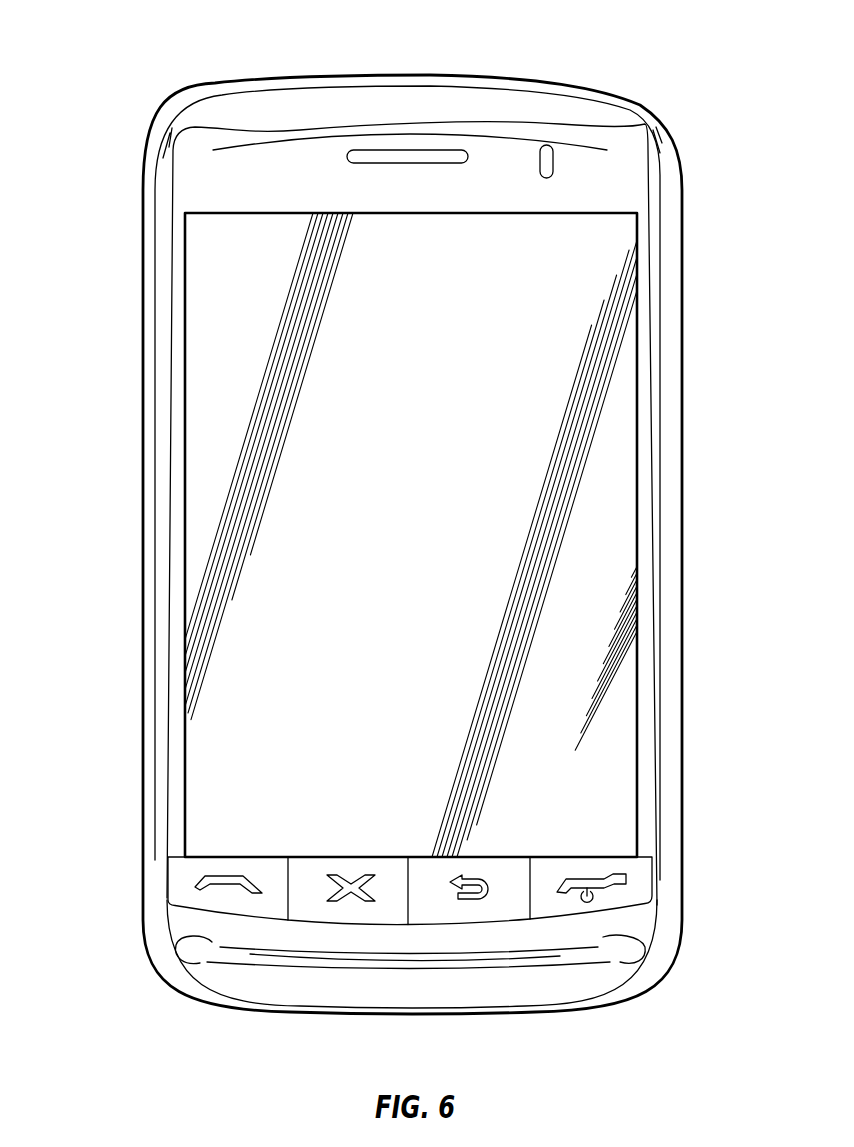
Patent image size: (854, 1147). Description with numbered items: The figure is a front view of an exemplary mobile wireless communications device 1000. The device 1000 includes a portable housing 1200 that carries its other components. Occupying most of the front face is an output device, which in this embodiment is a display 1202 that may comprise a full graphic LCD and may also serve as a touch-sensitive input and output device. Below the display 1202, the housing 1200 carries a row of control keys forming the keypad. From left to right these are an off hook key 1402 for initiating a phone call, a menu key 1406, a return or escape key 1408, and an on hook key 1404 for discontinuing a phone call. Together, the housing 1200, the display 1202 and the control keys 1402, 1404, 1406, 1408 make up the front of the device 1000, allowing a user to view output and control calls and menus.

The mobile wireless communications device 1000 is at (152, 87).
The portable housing 1200 is at (143, 266).
The display screen 1202 is at (615, 473).
The off hook key 1402 is at (207, 900).
The on hook key 1404 is at (556, 905).
The menu key 1406 is at (315, 880).
The return or escape key 1408 is at (517, 883).